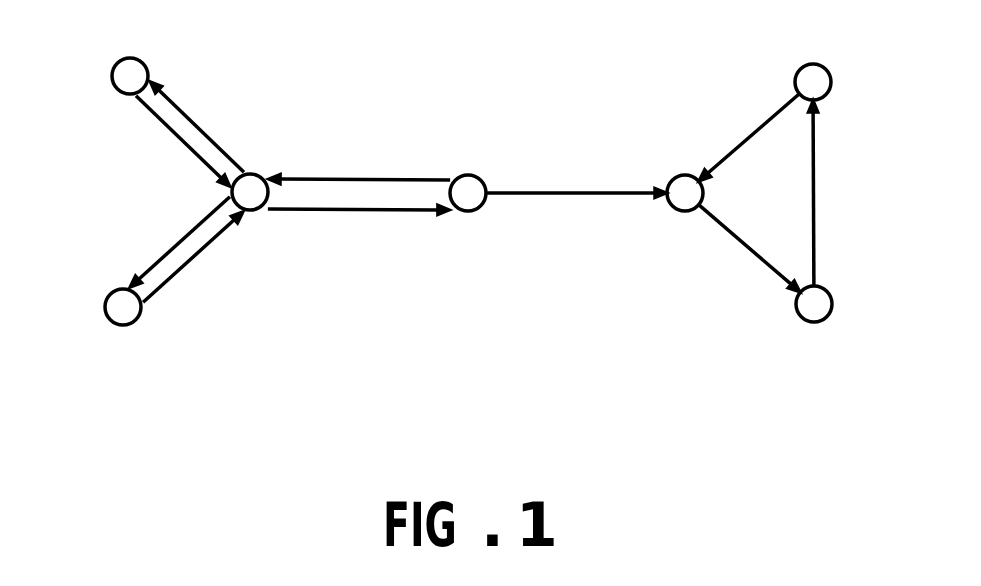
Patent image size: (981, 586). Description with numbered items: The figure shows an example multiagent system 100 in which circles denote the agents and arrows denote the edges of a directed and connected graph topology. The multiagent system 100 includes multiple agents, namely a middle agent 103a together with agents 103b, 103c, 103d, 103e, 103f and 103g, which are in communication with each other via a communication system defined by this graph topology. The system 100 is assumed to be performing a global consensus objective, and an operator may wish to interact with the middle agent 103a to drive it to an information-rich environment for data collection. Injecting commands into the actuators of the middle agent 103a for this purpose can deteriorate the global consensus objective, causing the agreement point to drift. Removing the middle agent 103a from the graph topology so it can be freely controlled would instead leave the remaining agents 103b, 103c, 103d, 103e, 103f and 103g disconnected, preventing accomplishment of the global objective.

The multiagent system 100 is at (715, 416).
The middle agent 103a is at (481, 211).
The agent 103b is at (115, 60).
The agent 103c is at (257, 209).
The agent 103d is at (139, 322).
The agent 103e is at (670, 180).
The agent 103f is at (832, 95).
The agent 103g is at (812, 331).